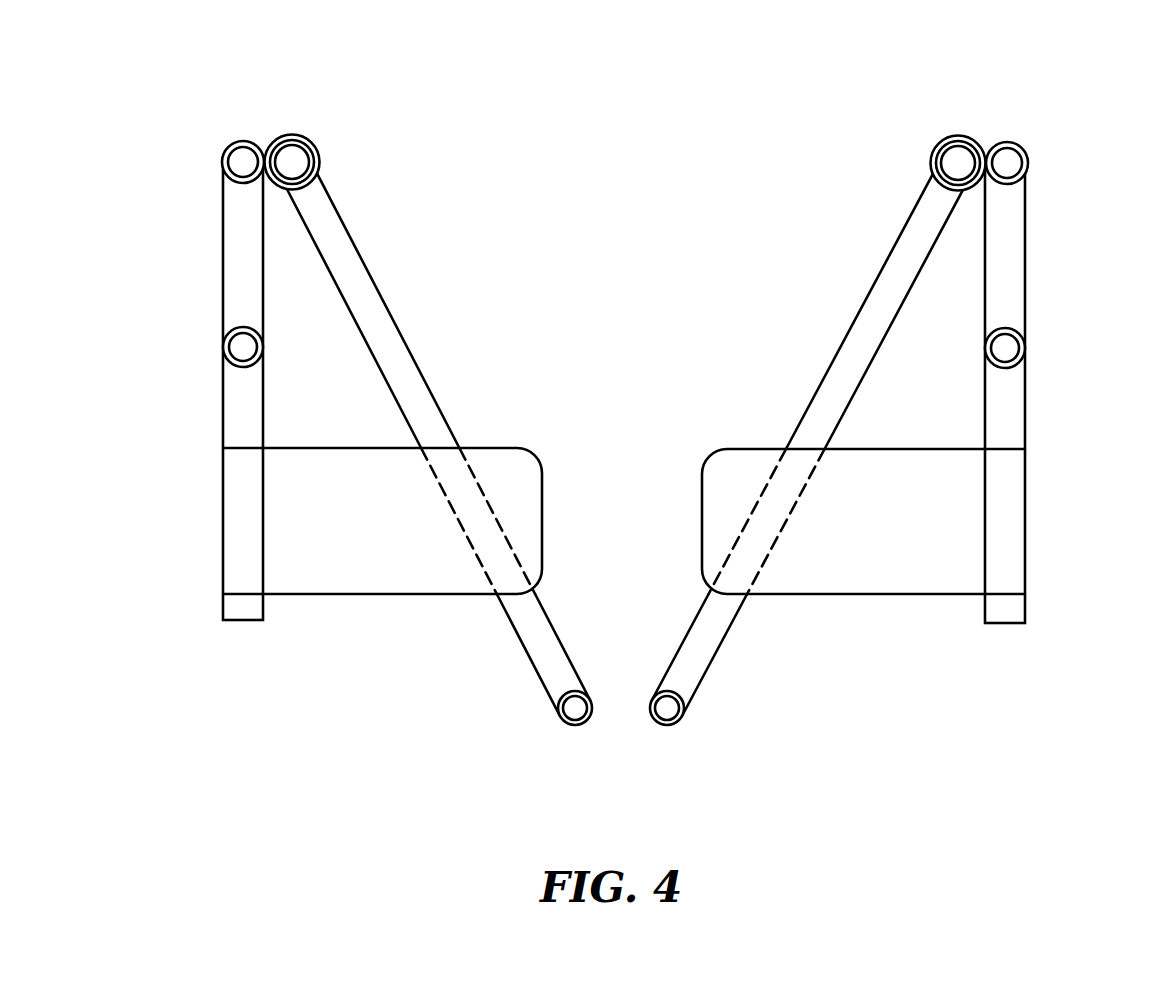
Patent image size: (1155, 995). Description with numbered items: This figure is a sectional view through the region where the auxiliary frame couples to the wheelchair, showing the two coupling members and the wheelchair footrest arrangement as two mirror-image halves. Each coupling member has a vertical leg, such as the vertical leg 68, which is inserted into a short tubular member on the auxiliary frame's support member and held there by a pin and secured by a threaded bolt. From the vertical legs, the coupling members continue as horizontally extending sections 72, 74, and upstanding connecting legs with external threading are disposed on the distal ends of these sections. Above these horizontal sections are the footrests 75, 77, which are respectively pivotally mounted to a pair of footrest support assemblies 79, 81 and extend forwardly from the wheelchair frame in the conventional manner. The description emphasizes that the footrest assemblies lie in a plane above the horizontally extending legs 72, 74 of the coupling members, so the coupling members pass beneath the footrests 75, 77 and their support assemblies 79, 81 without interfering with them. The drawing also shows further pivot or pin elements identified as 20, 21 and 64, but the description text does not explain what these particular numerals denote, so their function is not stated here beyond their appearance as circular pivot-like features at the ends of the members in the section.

The pivot pin 20 is at (1022, 148).
The pivot pin 21 is at (308, 135).
The pivot pin 64 is at (680, 715).
The vertical leg 68 is at (560, 718).
The horizontally extending section 72 is at (728, 632).
The horizontally extending section 74 is at (502, 610).
The footrest 75 is at (758, 449).
The footrest 77 is at (482, 448).
The footrest support assembly 79 is at (1025, 340).
The footrest support assembly 81 is at (224, 340).